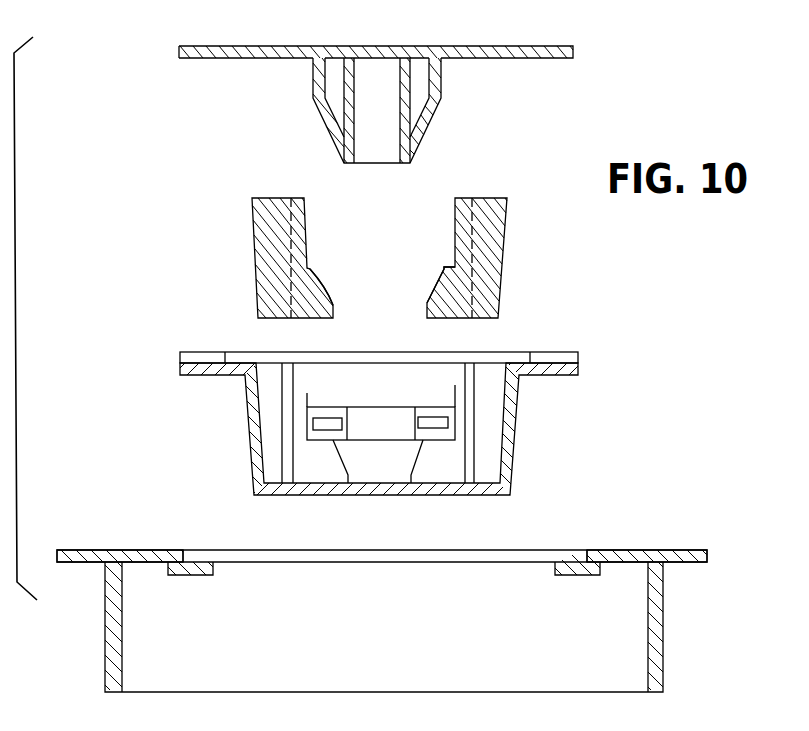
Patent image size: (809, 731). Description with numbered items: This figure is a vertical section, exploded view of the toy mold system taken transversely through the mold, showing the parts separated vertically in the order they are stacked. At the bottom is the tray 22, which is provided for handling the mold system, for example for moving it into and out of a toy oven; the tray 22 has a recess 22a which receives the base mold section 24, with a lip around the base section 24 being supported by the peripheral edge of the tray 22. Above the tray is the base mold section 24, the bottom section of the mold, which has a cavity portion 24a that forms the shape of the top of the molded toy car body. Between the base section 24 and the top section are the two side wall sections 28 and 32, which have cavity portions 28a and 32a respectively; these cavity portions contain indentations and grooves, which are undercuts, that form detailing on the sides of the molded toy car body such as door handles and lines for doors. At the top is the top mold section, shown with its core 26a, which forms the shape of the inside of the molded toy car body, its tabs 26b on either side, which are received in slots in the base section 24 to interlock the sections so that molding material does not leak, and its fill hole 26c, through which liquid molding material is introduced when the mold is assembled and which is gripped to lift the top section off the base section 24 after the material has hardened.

The tray 22 is at (657, 627).
The recess 22a is at (68, 555).
The base mold section 24 is at (510, 430).
The cavity portion 24a is at (385, 422).
The core 26a is at (414, 147).
The tabs 26b is at (224, 51).
The fill hole 26c is at (350, 86).
The side wall section 28 is at (492, 272).
The cavity portion 28a is at (448, 268).
The side wall section 32 is at (263, 271).
The cavity portion 32a is at (308, 268).